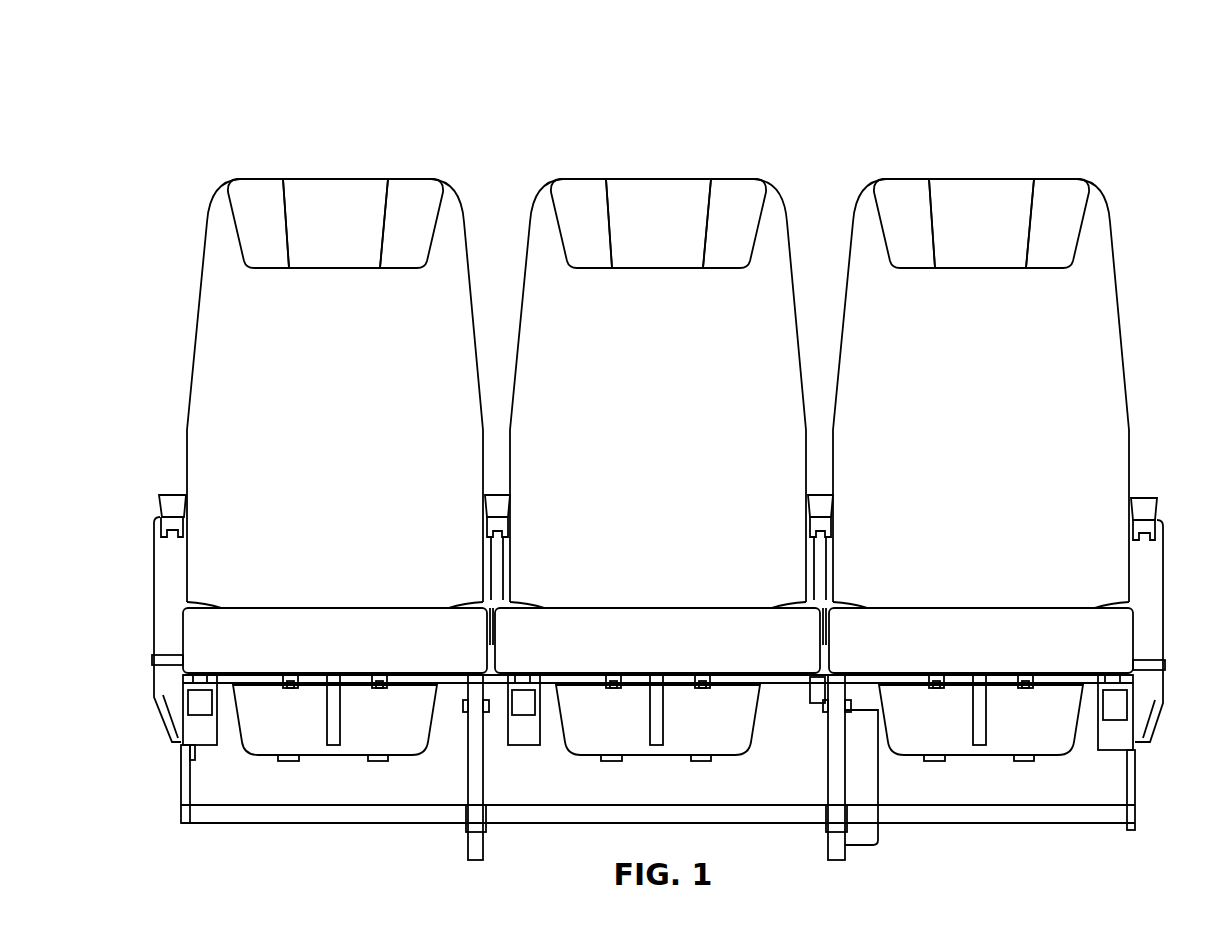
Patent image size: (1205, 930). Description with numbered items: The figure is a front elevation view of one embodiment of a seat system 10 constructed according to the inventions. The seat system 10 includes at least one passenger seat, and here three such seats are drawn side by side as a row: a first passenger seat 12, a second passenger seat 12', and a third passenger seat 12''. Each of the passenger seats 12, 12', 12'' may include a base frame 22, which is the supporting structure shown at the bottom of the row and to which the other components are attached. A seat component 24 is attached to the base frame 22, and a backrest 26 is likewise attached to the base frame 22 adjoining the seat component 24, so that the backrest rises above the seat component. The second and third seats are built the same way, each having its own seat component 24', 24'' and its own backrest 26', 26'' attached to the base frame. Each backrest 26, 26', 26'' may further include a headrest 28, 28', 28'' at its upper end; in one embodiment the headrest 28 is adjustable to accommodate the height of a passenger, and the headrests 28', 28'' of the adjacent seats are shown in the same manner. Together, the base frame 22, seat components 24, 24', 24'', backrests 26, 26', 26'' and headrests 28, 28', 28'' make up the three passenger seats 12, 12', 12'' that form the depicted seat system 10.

The seat system 10 is at (135, 114).
The passenger seat 12 is at (335, 409).
The passenger seat 12' is at (657, 409).
The passenger seat 12'' is at (981, 409).
The base frame 22 is at (185, 752).
The seat component 24 is at (335, 640).
The seat component 24' is at (657, 640).
The seat component 24'' is at (981, 640).
The backrest 26 is at (335, 393).
The backrest 26' is at (658, 393).
The backrest 26'' is at (981, 393).
The headrest 28 is at (335, 223).
The headrest 28' is at (658, 223).
The headrest 28'' is at (981, 223).